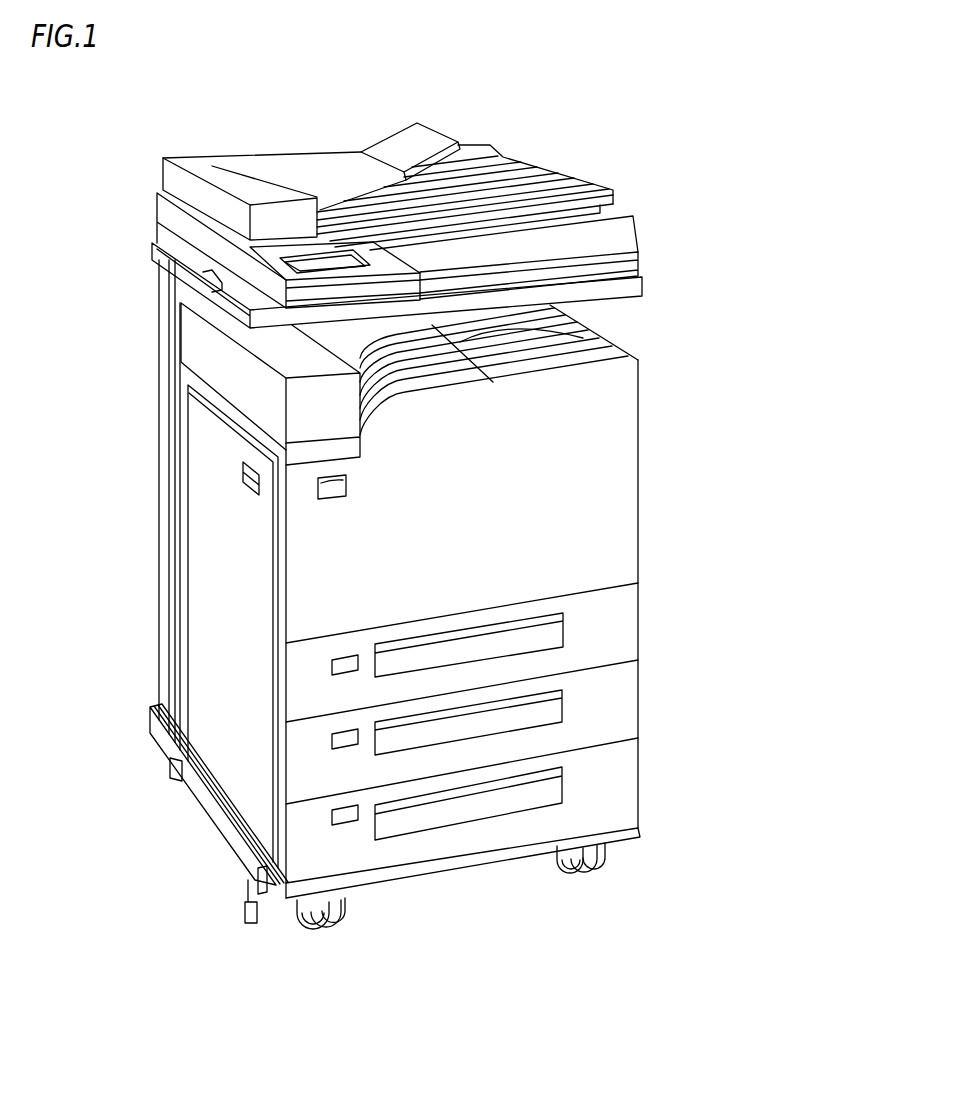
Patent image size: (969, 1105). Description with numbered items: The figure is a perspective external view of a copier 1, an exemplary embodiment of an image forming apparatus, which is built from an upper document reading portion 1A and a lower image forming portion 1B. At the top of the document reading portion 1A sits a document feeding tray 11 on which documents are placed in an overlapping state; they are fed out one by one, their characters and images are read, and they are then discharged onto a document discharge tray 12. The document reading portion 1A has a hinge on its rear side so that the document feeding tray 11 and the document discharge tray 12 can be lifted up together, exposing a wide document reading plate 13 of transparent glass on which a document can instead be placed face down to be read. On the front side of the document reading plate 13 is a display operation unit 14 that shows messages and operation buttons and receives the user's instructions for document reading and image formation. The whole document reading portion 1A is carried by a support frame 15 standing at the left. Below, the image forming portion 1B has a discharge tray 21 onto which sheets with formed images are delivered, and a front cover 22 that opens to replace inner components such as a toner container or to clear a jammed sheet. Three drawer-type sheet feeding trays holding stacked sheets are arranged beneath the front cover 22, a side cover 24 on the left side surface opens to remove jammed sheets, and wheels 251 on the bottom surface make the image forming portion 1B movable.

The copier 1 is at (660, 224).
The document reading portion 1A is at (610, 167).
The image forming portion 1B is at (661, 445).
The document feeding tray 11 is at (327, 164).
The document discharge tray 12 is at (508, 178).
The document reading plate 13 is at (540, 200).
The display operation unit 14 is at (308, 262).
The support frame 15 is at (157, 374).
The discharge tray 21 is at (625, 333).
The front cover 22 is at (622, 480).
The side cover 24 is at (198, 533).
The wheels 251 is at (610, 853).